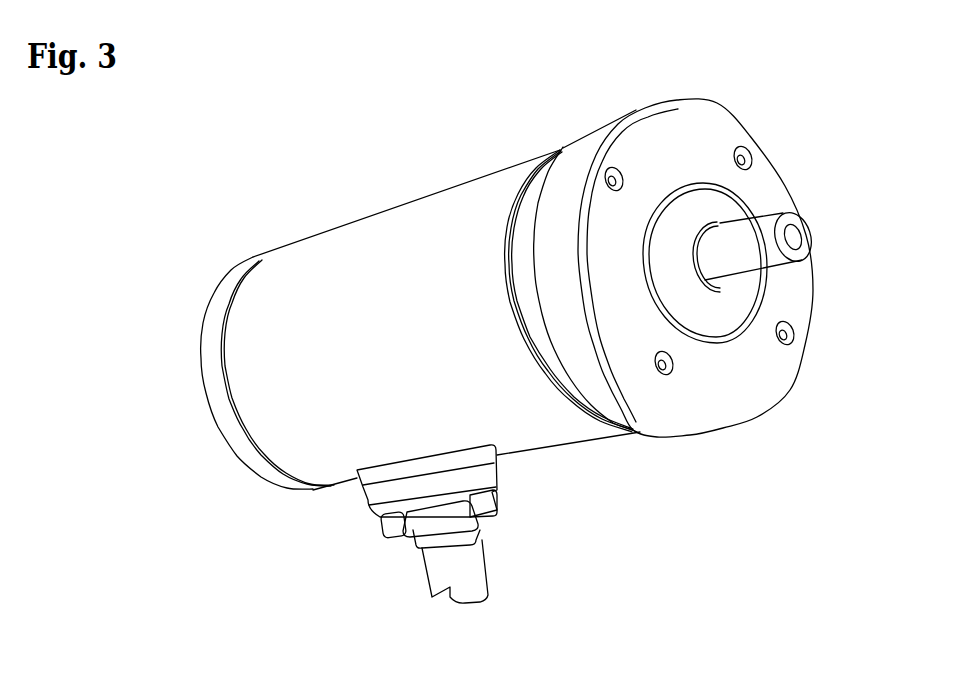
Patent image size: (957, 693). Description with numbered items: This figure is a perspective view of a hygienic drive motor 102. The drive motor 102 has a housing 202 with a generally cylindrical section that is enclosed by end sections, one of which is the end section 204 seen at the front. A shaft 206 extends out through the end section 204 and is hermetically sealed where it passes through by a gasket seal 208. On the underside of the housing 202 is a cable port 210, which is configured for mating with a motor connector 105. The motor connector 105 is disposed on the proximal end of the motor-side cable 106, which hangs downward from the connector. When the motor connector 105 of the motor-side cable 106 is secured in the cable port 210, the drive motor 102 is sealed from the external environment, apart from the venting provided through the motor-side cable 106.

The drive motor 102 is at (549, 354).
The housing 202 is at (397, 223).
The end section 204 is at (747, 378).
The shaft 206 is at (803, 235).
The gasket seal 208 is at (722, 312).
The cable port 210 is at (445, 480).
The motor connector 105 is at (430, 517).
The motor-side cable 106 is at (467, 573).